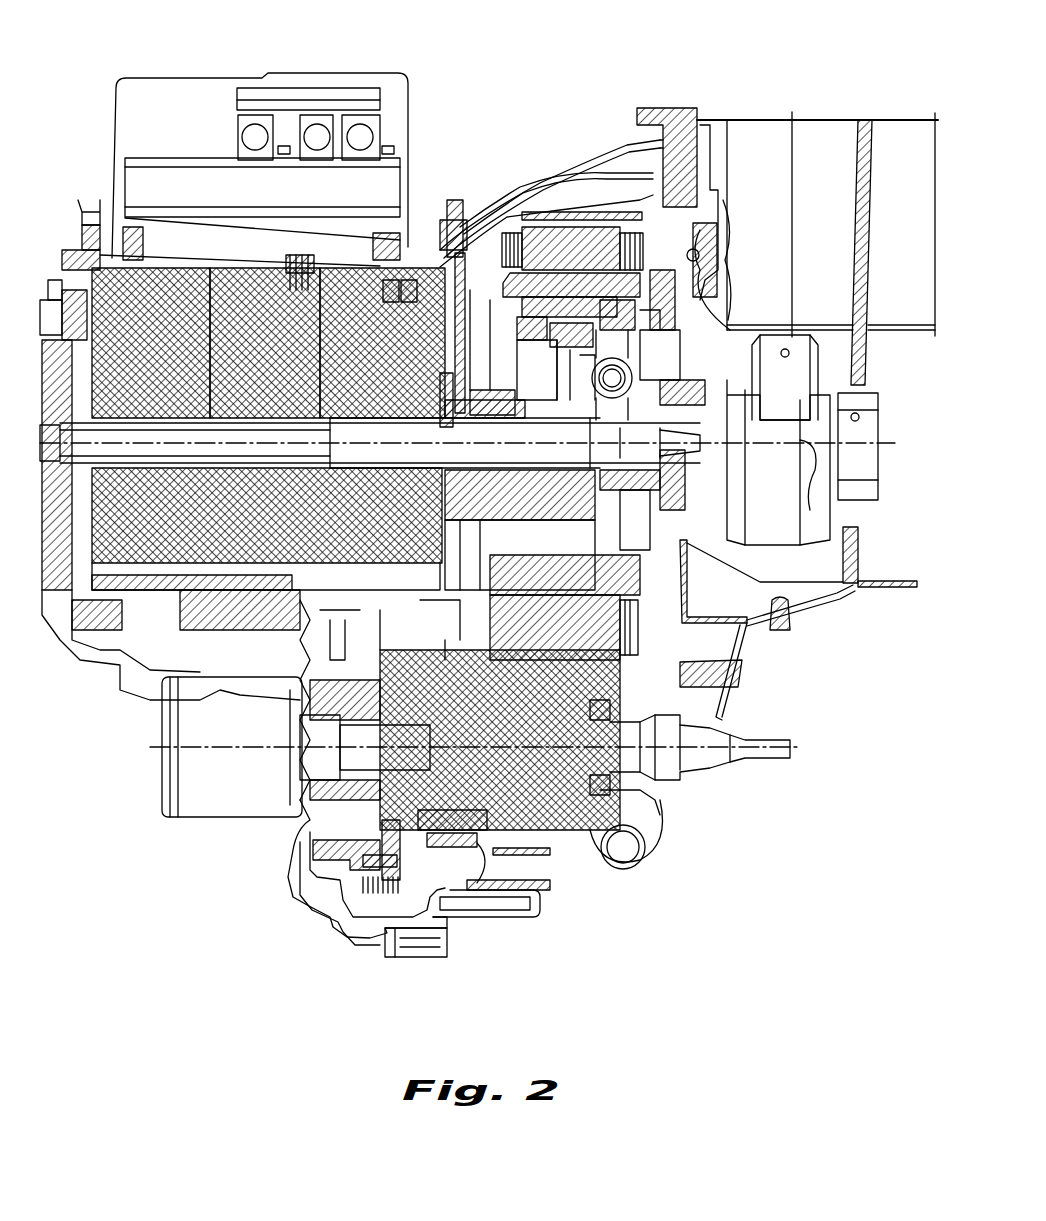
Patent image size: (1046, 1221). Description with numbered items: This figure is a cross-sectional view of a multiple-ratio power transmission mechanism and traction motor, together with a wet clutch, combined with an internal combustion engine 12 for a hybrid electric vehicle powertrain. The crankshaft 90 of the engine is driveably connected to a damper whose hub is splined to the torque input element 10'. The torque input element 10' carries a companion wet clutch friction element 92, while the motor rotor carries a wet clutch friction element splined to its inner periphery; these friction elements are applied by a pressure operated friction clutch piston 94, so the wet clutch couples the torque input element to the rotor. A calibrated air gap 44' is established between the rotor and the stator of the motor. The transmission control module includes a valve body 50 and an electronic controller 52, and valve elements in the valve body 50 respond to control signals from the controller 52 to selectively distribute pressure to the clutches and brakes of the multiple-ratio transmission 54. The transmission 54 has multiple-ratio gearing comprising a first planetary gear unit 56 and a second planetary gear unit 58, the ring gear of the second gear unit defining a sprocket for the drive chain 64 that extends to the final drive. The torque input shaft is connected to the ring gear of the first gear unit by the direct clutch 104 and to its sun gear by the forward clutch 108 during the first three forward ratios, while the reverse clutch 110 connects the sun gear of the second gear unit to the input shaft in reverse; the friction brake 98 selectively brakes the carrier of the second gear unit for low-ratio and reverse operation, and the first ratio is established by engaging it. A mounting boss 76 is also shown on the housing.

The torque input element 10' is at (663, 500).
The engine 12 is at (882, 265).
The air gap 44' is at (703, 623).
The valve body 50 is at (372, 185).
The electronic controller 52 is at (348, 95).
The multiple-ratio transmission 54 is at (300, 250).
The first planetary gear unit 56 is at (392, 278).
The second planetary gear unit 58 is at (473, 213).
The drive chain 64 is at (410, 278).
The mounting boss 76 is at (567, 192).
The crankshaft 90 is at (823, 480).
The wet clutch friction element 92 is at (548, 295).
The friction clutch piston 94 is at (517, 347).
The friction brake 98 is at (278, 317).
The direct clutch 104 is at (163, 347).
The forward clutch 108 is at (240, 333).
The reverse clutch 110 is at (64, 290).